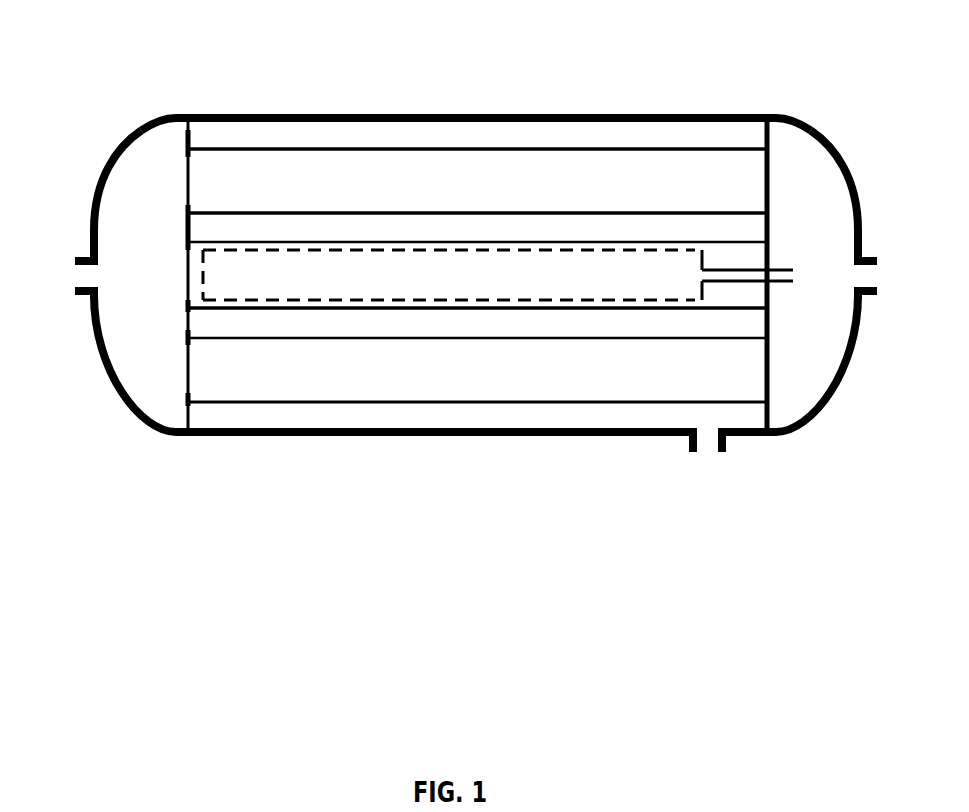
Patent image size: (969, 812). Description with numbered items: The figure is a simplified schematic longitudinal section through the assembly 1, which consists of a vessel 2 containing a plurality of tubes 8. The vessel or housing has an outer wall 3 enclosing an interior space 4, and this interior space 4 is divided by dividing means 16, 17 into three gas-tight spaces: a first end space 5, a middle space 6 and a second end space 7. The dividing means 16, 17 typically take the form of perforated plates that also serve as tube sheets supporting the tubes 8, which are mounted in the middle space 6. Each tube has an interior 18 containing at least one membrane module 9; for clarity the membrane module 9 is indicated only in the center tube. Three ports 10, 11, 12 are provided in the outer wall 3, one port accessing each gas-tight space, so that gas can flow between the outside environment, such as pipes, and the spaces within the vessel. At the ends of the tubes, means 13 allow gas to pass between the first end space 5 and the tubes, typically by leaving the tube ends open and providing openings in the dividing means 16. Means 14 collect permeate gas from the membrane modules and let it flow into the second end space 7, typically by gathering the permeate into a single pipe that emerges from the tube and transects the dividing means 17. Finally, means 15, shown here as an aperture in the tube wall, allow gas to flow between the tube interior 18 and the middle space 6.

The assembly 1 is at (625, 13).
The vessel 2 is at (317, 104).
The outer wall 3 is at (439, 115).
The interior space 4 is at (592, 135).
The first end space 5 is at (140, 352).
The middle space 6 is at (506, 415).
The second end space 7 is at (820, 352).
The tubes 8 is at (348, 213).
The membrane module 9 is at (593, 301).
The port 10 is at (83, 254).
The port 11 is at (868, 257).
The port 12 is at (725, 448).
The means for allowing gas flow between first space and tubes 13 is at (190, 177).
The permeate collecting means 14 is at (782, 271).
The means for allowing gas flow between tube interior and middle space 15 is at (728, 213).
The dividing means 16 is at (178, 137).
The dividing means 17 is at (775, 138).
The tube interior 18 is at (433, 373).